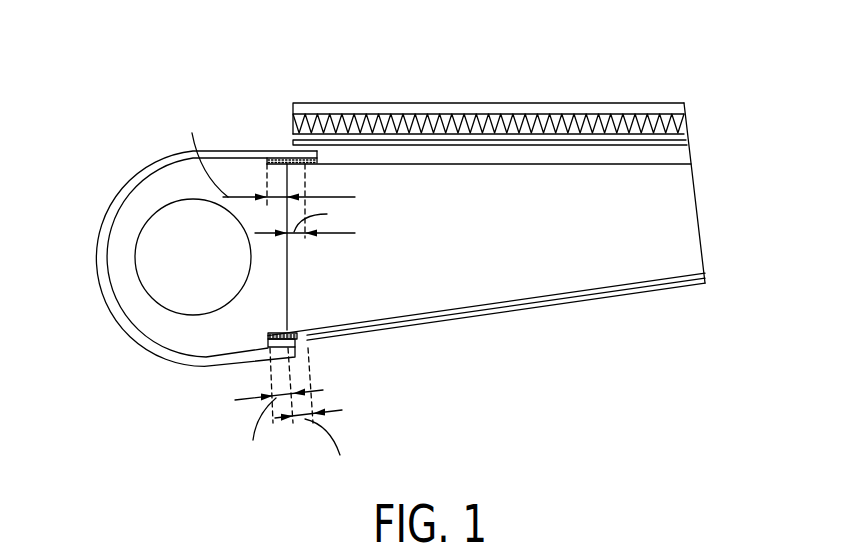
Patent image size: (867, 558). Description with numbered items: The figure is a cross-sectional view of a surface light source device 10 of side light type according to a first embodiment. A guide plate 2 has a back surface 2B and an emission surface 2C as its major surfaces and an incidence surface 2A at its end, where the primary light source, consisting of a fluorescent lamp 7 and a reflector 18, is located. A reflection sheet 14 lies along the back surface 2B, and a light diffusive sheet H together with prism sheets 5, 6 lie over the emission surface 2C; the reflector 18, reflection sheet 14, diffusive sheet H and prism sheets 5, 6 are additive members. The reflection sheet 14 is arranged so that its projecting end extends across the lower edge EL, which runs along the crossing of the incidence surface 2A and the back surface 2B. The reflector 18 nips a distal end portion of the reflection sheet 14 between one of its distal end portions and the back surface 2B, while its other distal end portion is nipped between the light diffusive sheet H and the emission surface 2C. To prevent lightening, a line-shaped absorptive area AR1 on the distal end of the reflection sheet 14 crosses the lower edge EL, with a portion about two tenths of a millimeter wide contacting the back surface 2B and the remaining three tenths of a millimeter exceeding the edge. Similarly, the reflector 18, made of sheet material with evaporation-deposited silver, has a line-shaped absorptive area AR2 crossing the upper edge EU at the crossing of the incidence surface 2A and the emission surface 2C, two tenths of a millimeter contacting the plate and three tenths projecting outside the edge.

The surface light source device 10 is at (147, 64).
The guide plate 2 is at (552, 282).
The incidence surface 2A is at (289, 276).
The back surface 2B is at (641, 287).
The emission surface 2C is at (613, 165).
The prism sheet 5 is at (463, 122).
The prism sheet 6 is at (407, 110).
The fluorescent lamp 7 is at (190, 303).
The reflection sheet 14 is at (485, 316).
The reflector 18 is at (87, 233).
The light diffusive sheet H is at (612, 140).
The upper edge EU is at (289, 166).
The lower edge EL is at (283, 333).
The absorptive area AR1 is at (302, 333).
The absorptive area AR2 is at (273, 161).